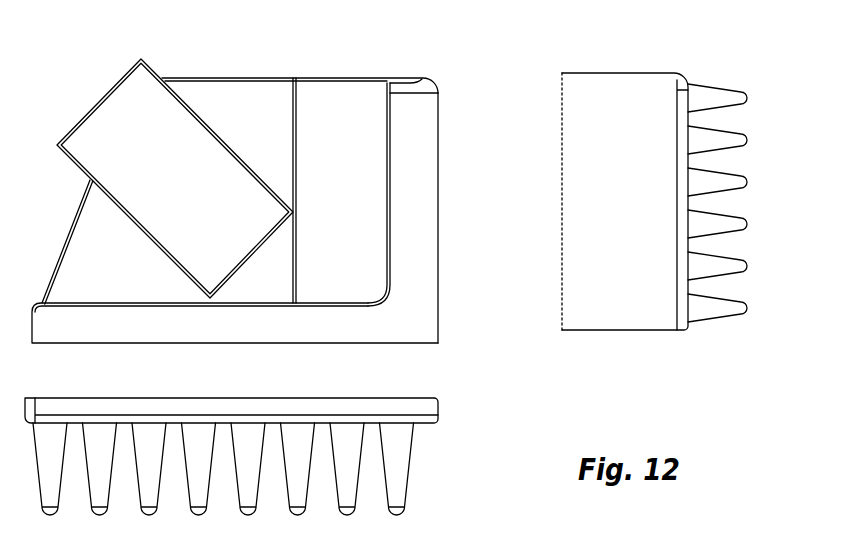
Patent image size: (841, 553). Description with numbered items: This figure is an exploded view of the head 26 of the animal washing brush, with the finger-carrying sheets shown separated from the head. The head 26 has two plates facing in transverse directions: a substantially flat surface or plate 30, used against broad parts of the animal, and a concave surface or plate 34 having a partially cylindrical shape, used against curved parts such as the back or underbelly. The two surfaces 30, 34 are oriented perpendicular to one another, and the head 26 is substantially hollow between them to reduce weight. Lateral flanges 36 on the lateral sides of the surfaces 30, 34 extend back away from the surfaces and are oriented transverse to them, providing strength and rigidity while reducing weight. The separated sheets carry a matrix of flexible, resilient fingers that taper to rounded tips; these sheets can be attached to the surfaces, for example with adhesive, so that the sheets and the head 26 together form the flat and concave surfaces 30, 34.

The head 26 is at (256, 60).
The flat surface or plate 30 is at (108, 338).
The concave surface or plate 34 is at (438, 102).
The lateral flanges 36 is at (402, 150).